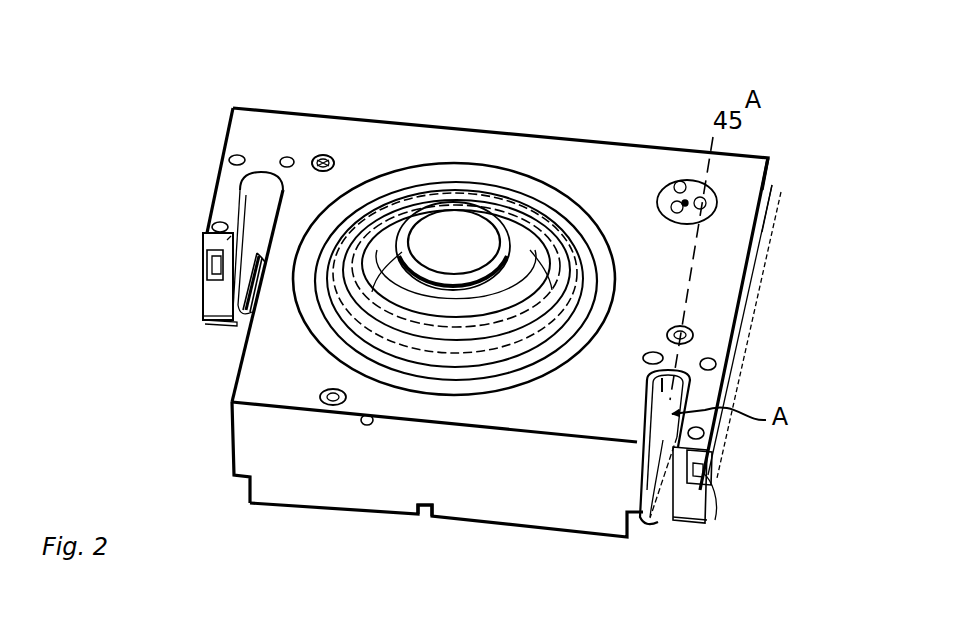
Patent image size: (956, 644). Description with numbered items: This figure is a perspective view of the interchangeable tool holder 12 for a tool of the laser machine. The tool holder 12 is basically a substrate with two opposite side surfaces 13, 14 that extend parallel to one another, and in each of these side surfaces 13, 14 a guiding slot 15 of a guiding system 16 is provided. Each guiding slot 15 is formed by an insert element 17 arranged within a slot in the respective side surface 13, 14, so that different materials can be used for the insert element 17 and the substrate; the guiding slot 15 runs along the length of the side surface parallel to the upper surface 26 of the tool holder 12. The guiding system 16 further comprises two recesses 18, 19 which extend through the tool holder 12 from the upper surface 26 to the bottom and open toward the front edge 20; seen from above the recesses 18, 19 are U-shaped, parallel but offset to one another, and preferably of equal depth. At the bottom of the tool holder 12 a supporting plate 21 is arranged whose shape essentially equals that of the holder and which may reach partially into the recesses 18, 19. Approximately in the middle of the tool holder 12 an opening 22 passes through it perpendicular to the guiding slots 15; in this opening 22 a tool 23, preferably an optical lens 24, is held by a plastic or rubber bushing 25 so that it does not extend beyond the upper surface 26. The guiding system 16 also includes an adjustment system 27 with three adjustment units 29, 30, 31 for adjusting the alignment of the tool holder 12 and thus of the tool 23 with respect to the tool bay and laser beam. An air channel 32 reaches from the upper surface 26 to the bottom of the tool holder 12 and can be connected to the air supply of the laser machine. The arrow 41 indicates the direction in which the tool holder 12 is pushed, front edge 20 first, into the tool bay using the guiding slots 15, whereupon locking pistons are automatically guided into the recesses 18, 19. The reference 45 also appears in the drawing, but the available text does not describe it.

The tool holder 12 is at (675, 118).
The side surface 13 is at (203, 289).
The side surface 14 is at (741, 350).
The guiding slot 15 is at (207, 270).
The guiding system 16 is at (203, 259).
The insert element 17 is at (207, 249).
The recess 18 is at (641, 520).
The recess 19 is at (240, 280).
The front edge 20 is at (556, 512).
The supporting plate 21 is at (213, 320).
The opening 22 is at (452, 168).
The tool 23 is at (476, 224).
The optical lens 24 is at (454, 242).
The bushing 25 is at (405, 204).
The upper surface 26 is at (724, 265).
The adjustment system 27 is at (316, 152).
The adjustment unit 29 is at (686, 324).
The adjustment unit 30 is at (328, 152).
The adjustment unit 31 is at (325, 413).
The air channel 32 is at (700, 188).
The arrow 41 is at (473, 506).
The mounting hole 45 is at (347, 160).